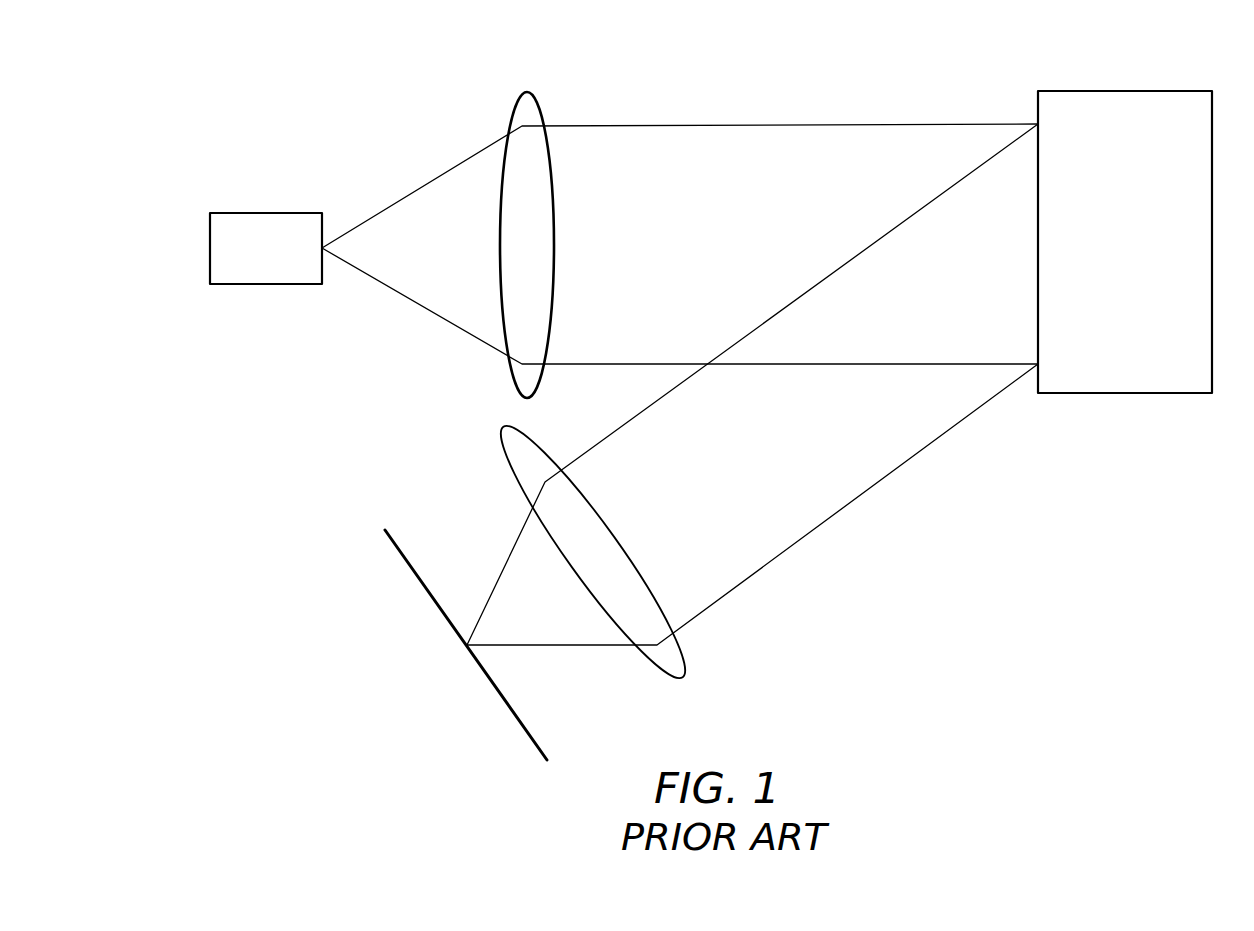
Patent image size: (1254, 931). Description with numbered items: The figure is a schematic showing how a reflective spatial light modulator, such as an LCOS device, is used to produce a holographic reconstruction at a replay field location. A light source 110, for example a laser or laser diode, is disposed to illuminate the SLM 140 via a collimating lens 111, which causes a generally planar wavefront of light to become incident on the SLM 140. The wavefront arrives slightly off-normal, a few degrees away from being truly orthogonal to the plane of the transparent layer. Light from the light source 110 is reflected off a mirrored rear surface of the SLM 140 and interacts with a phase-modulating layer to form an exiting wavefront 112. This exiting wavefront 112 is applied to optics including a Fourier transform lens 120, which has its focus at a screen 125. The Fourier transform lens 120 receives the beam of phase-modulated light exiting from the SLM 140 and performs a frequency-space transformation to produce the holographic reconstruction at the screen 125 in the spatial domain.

The light source 110 is at (290, 213).
The collimating lens 111 is at (523, 92).
The SLM 140 is at (1179, 91).
The exiting wavefront 112 is at (875, 485).
The Fourier transform lens 120 is at (683, 678).
The screen 125 is at (525, 737).